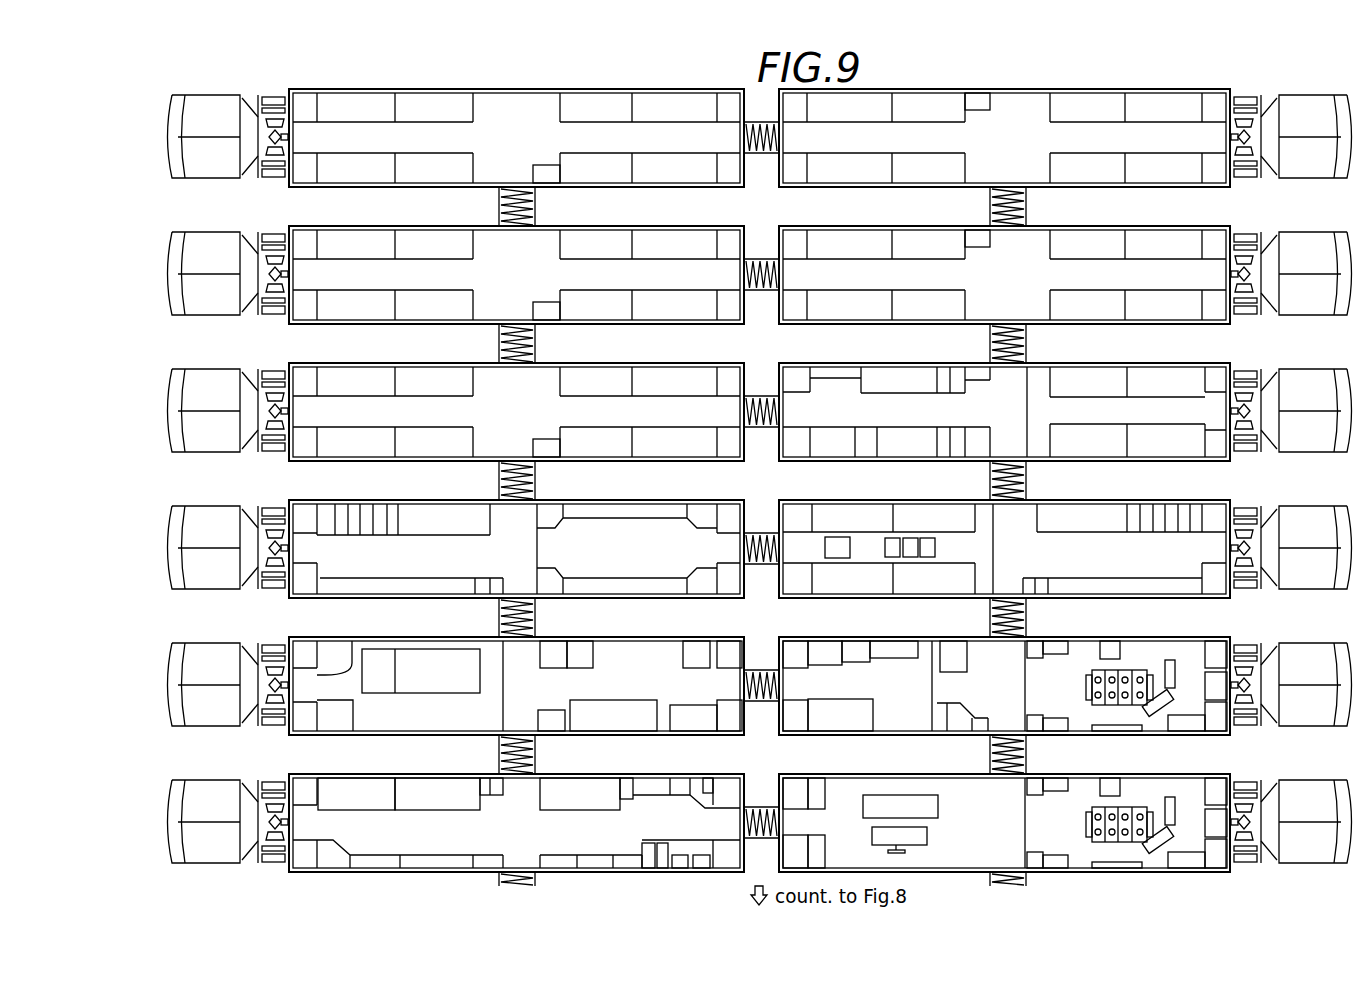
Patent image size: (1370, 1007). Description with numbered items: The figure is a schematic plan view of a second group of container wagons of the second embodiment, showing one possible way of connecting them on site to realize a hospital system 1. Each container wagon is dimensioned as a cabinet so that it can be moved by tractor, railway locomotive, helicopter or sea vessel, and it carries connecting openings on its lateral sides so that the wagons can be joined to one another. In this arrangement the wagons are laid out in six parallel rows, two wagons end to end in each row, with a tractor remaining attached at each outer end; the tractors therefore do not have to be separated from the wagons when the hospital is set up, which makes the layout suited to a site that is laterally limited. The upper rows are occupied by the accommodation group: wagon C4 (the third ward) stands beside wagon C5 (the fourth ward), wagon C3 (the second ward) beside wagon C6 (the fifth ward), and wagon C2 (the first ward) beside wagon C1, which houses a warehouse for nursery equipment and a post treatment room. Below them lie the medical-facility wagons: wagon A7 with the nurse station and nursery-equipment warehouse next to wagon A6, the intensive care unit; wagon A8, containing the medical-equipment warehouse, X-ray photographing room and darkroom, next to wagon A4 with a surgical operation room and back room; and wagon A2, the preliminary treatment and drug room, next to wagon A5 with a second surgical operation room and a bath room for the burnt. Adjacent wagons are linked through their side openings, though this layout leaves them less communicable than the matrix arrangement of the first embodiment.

The hospital system 1 is at (1010, 72).
The container wagon C1 is at (1214, 363).
The container wagon C2 is at (292, 363).
The container wagon C3 is at (292, 226).
The container wagon C4 is at (319, 89).
The container wagon C5 is at (1185, 89).
The container wagon C6 is at (1214, 226).
The container wagon A2 is at (292, 774).
The container wagon A4 is at (1222, 637).
The container wagon A5 is at (1222, 774).
The container wagon A6 is at (1222, 500).
The container wagon A7 is at (292, 500).
The container wagon A8 is at (292, 637).